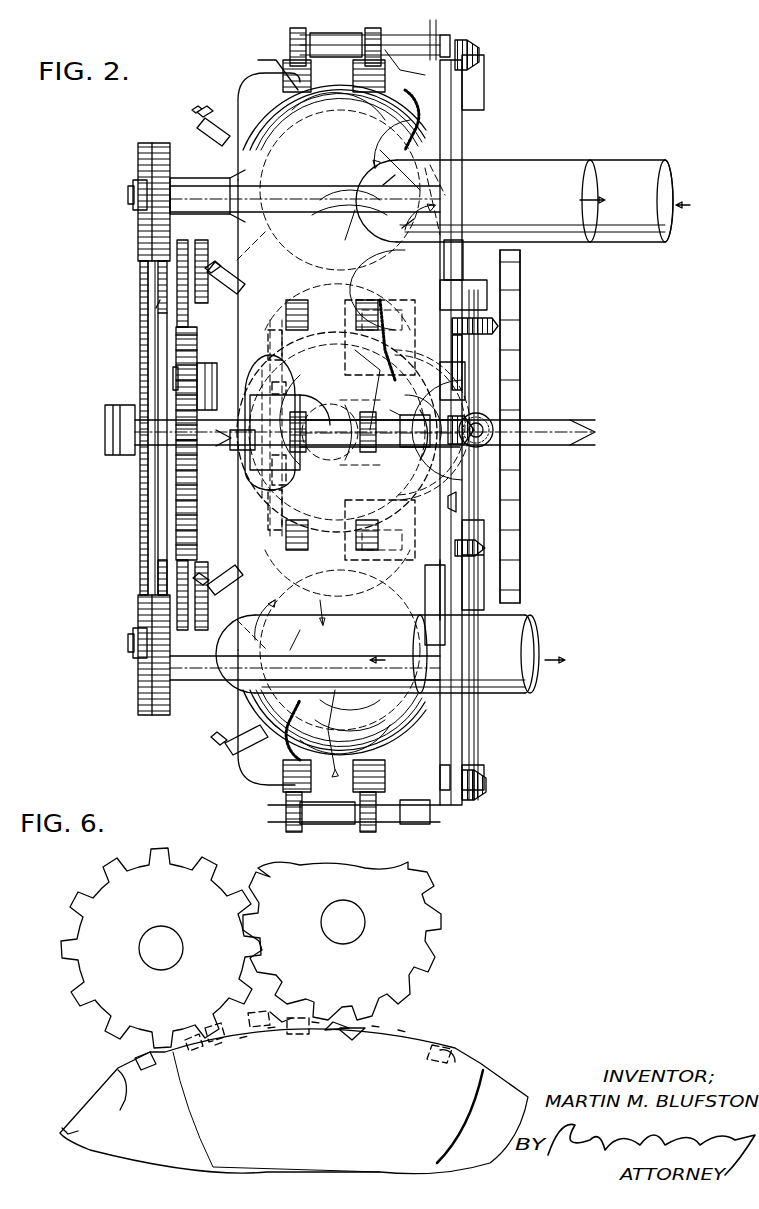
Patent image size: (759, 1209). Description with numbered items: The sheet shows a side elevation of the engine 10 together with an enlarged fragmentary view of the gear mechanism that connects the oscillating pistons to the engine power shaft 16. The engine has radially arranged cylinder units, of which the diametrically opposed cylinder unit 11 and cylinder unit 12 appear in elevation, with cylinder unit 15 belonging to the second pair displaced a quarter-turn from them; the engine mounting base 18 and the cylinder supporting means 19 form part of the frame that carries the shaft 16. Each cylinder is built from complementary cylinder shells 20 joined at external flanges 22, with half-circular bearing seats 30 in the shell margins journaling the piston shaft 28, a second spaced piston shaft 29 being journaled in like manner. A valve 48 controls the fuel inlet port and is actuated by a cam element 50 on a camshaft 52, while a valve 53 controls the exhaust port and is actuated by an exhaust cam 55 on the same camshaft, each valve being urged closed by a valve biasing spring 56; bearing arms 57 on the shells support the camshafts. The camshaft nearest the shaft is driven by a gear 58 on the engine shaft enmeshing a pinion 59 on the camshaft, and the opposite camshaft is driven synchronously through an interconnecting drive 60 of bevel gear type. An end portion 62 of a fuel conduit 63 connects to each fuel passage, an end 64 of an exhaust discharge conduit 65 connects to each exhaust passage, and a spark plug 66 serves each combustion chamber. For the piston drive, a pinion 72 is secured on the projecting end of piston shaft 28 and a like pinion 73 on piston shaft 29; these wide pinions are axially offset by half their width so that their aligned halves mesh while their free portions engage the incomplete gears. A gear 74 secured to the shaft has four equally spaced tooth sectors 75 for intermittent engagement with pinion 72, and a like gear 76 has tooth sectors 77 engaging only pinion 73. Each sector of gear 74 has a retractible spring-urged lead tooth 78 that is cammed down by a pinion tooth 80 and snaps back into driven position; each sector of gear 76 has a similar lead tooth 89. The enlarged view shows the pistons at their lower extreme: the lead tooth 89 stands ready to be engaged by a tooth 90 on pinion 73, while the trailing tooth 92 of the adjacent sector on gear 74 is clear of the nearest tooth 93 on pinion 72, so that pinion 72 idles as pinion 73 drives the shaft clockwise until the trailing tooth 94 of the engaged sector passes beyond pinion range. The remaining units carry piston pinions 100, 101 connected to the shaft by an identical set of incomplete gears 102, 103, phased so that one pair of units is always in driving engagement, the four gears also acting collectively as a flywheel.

In FIG. 2, the engine 10 is at (240, 108).
In FIG. 2, the cylinder unit 11 is at (250, 175).
In FIG. 2, the cylinder unit 12 is at (420, 695).
In FIG. 2, the cylinder unit 15 is at (425, 575).
In FIG. 2, the engine power shaft 16 is at (108, 430).
In FIG. 2, the engine mounting base 18 is at (515, 470).
In FIG. 2, the cylinder supporting means 19 is at (372, 318).
In FIG. 2, the cylinder shell 20 is at (272, 125).
In FIG. 2, the external flange 22 is at (315, 200).
In FIG. 2, the piston shaft 28 is at (133, 190).
In FIG. 6, the piston shaft 28 is at (160, 926).
In FIG. 2, the piston shaft 29 is at (130, 198).
In FIG. 6, the piston shaft 29 is at (366, 912).
In FIG. 2, the bearing seat 30 is at (210, 182).
In FIG. 2, the valve 48 is at (340, 420).
In FIG. 2, the cam element 50 is at (290, 40).
In FIG. 2, the camshaft 52 is at (386, 443).
In FIG. 2, the valve 53 is at (304, 432).
In FIG. 2, the exhaust cam 55 is at (381, 40).
In FIG. 2, the valve biasing spring 56 is at (311, 70).
In FIG. 2, the bearing arm 57 is at (335, 40).
In FIG. 2, the gear 58 is at (265, 435).
In FIG. 2, the pinion 59 is at (264, 430).
In FIG. 2, the interconnecting drive 60 is at (475, 50).
In FIG. 2, the end portion of fuel conduit 62 is at (260, 68).
In FIG. 2, the fuel conduit 63 is at (265, 75).
In FIG. 2, the end of exhaust discharge conduit 64 is at (415, 776).
In FIG. 2, the exhaust discharge conduit 65 is at (420, 98).
In FIG. 2, the spark plug 66 is at (210, 120).
In FIG. 2, the pinion 72 is at (143, 150).
In FIG. 6, the pinion 72 is at (90, 930).
In FIG. 2, the pinion 73 is at (160, 150).
In FIG. 6, the pinion 73 is at (428, 925).
In FIG. 2, the gear 74 is at (140, 290).
In FIG. 6, the gear 74 is at (205, 1132).
In FIG. 6, the tooth sector 75 is at (355, 1040).
In FIG. 2, the gear 76 is at (173, 375).
In FIG. 6, the gear 76 is at (62, 1132).
In FIG. 2, the tooth sector 77 is at (158, 275).
In FIG. 6, the tooth sector 77 is at (150, 1070).
In FIG. 2, the lead tooth 78 is at (140, 380).
In FIG. 6, the lead tooth 78 is at (448, 1040).
In FIG. 6, the pinion tooth 80 is at (338, 1022).
In FIG. 2, the lead tooth 89 is at (158, 308).
In FIG. 6, the lead tooth 89 is at (298, 1032).
In FIG. 6, the pinion tooth 90 is at (282, 1002).
In FIG. 6, the trailing tooth 92 is at (270, 1030).
In FIG. 6, the pinion tooth 93 is at (242, 1010).
In FIG. 6, the trailing tooth 94 is at (125, 1090).
In FIG. 2, the piston pinion 100 is at (176, 340).
In FIG. 2, the piston pinion 101 is at (176, 500).
In FIG. 2, the incomplete gear 102 is at (150, 258).
In FIG. 2, the incomplete gear 103 is at (218, 280).